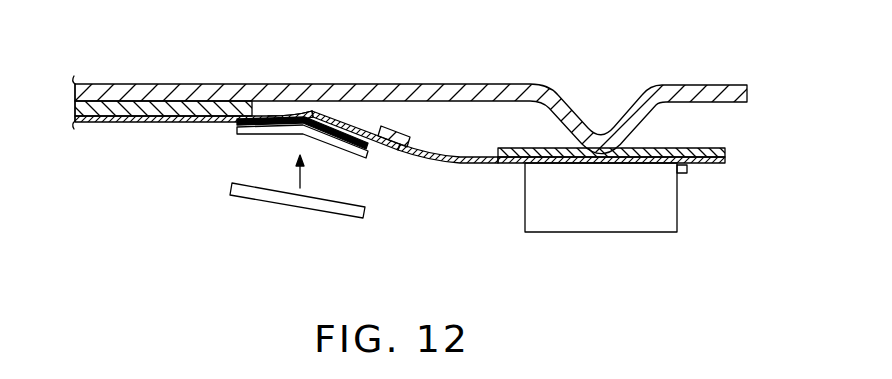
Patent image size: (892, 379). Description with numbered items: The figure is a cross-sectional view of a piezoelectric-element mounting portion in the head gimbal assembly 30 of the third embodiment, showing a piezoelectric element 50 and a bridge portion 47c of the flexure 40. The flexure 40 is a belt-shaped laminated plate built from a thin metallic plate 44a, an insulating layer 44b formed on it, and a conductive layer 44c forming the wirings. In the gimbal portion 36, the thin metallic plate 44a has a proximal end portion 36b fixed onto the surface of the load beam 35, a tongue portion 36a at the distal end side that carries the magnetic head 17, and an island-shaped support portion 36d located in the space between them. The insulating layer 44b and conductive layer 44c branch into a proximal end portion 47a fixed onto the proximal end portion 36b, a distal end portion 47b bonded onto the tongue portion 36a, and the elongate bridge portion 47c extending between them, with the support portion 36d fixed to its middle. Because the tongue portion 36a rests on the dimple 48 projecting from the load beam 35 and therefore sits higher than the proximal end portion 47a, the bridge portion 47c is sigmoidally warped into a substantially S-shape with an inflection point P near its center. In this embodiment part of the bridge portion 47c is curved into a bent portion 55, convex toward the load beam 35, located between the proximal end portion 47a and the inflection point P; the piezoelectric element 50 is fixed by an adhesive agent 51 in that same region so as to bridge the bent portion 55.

The head gimbal assembly 30 is at (270, 69).
The gimbal portion 36 is at (482, 192).
The load beam 35 is at (363, 93).
The dimple 48 is at (605, 132).
The flexure 40 is at (135, 132).
The proximal end portion 36b is at (193, 107).
The thin metallic plate 44a is at (82, 104).
The insulating layer 44b is at (92, 122).
The conductive layer 44c is at (92, 122).
The proximal end portion 47a is at (173, 122).
The bent portion 55 is at (311, 108).
The inflection point P is at (387, 150).
The bridge portion 47c is at (450, 152).
The island-shaped support portion 36d is at (395, 128).
The tongue portion 36a is at (527, 148).
The distal end portion 47b is at (700, 165).
The adhesive agent 51 is at (337, 148).
The piezoelectric element 50 is at (262, 134).
The magnetic head 17 is at (603, 220).